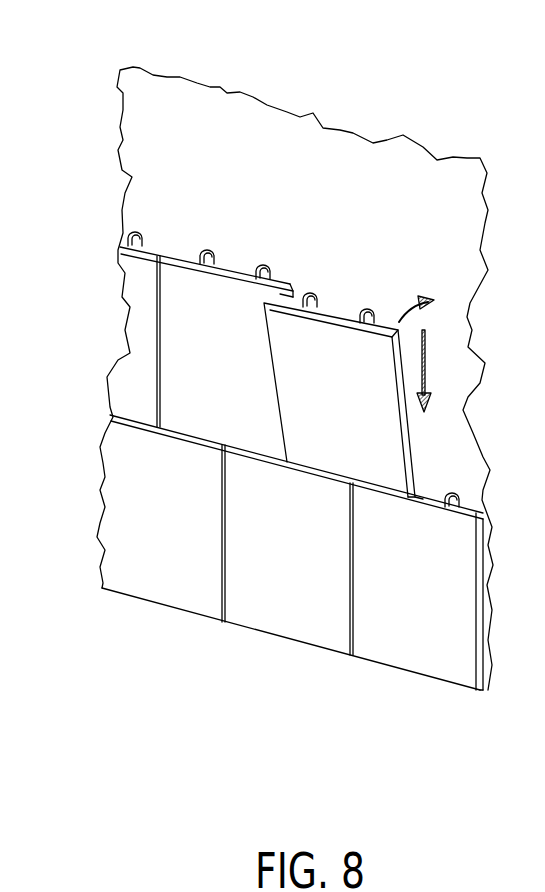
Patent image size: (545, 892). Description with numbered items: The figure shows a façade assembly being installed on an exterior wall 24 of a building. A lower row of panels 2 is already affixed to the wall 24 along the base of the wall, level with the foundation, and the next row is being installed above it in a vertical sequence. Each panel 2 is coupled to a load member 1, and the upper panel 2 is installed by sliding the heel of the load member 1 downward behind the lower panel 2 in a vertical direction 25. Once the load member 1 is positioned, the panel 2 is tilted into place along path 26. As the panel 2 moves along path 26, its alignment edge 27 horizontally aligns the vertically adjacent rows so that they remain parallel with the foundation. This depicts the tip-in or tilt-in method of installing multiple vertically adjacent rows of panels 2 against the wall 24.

The exterior wall 24 is at (295, 378).
The panel 2 is at (262, 632).
The load member 1 is at (375, 318).
The vertical direction 25 is at (439, 371).
The path 26 is at (424, 292).
The alignment edge 27 is at (423, 497).